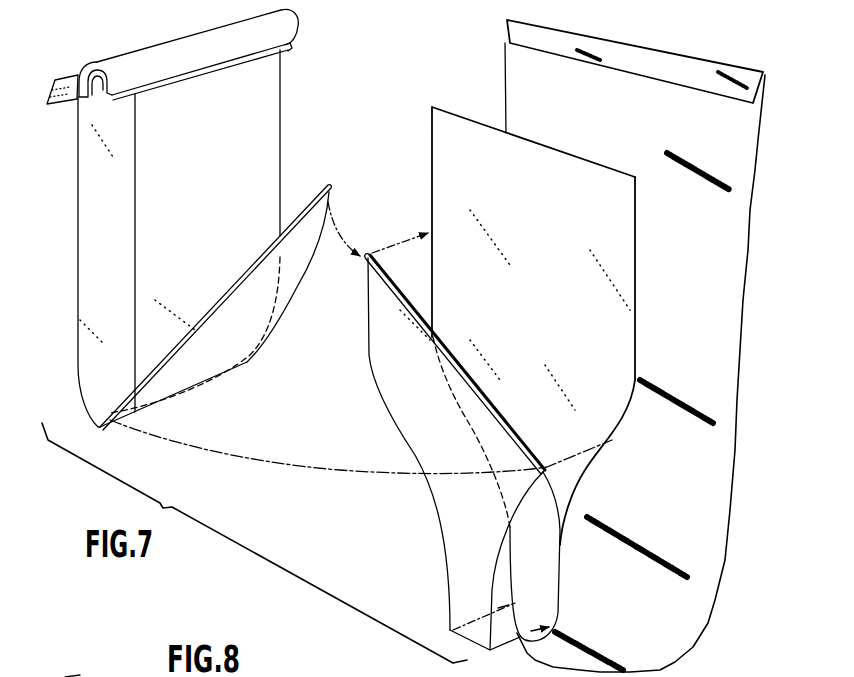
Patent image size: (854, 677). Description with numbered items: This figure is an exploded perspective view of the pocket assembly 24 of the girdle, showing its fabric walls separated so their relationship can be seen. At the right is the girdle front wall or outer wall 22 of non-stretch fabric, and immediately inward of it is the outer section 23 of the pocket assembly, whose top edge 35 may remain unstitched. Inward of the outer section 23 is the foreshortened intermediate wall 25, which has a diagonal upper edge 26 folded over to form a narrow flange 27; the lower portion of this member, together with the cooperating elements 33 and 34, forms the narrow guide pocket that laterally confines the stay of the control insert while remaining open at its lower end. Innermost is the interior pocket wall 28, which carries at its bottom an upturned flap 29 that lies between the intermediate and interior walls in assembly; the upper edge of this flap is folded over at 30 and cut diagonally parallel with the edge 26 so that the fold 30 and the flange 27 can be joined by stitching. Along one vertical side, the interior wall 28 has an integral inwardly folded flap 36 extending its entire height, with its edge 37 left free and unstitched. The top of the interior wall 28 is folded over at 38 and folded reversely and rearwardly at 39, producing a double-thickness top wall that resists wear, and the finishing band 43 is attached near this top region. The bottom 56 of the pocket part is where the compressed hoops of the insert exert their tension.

The outer wall 22 is at (717, 352).
The outer section 23 is at (620, 352).
The pocket assembly 24 is at (285, 112).
The intermediate wall 25 is at (398, 408).
The diagonal upper edge 26 is at (467, 377).
The narrow flange 27 is at (388, 282).
The interior pocket wall 28 is at (257, 167).
The upturned flap 29 is at (227, 337).
The folded-over upper edge 30 is at (250, 272).
The guide pocket element 33 is at (540, 562).
The guide pocket element 34 is at (463, 565).
The top edge 35 is at (550, 148).
The inwardly folded flap 36 is at (102, 235).
The edge 37 is at (138, 168).
The folded-over top 38 is at (286, 27).
The reversely folded layer 39 is at (90, 92).
The finishing band 43 is at (67, 77).
The bottom 56 is at (192, 388).